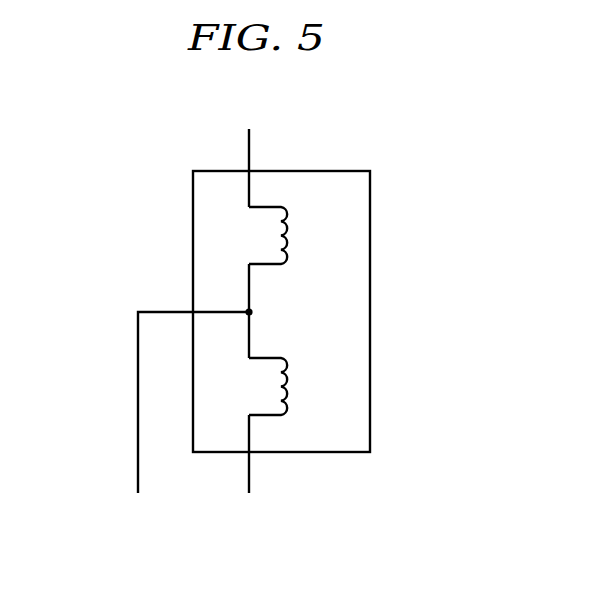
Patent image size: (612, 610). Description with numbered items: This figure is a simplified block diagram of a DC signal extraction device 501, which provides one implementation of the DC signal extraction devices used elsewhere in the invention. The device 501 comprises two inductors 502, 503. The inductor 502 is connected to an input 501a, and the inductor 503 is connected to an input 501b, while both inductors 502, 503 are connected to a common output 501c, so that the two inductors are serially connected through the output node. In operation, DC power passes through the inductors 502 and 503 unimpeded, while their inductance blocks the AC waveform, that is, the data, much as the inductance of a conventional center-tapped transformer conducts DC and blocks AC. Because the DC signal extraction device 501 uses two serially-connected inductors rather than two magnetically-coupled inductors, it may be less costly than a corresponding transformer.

The DC signal extraction device 501 is at (370, 192).
The input 501a is at (249, 149).
The input 501b is at (249, 481).
The output 501c is at (138, 476).
The inductor 502 is at (289, 234).
The inductor 503 is at (289, 385).